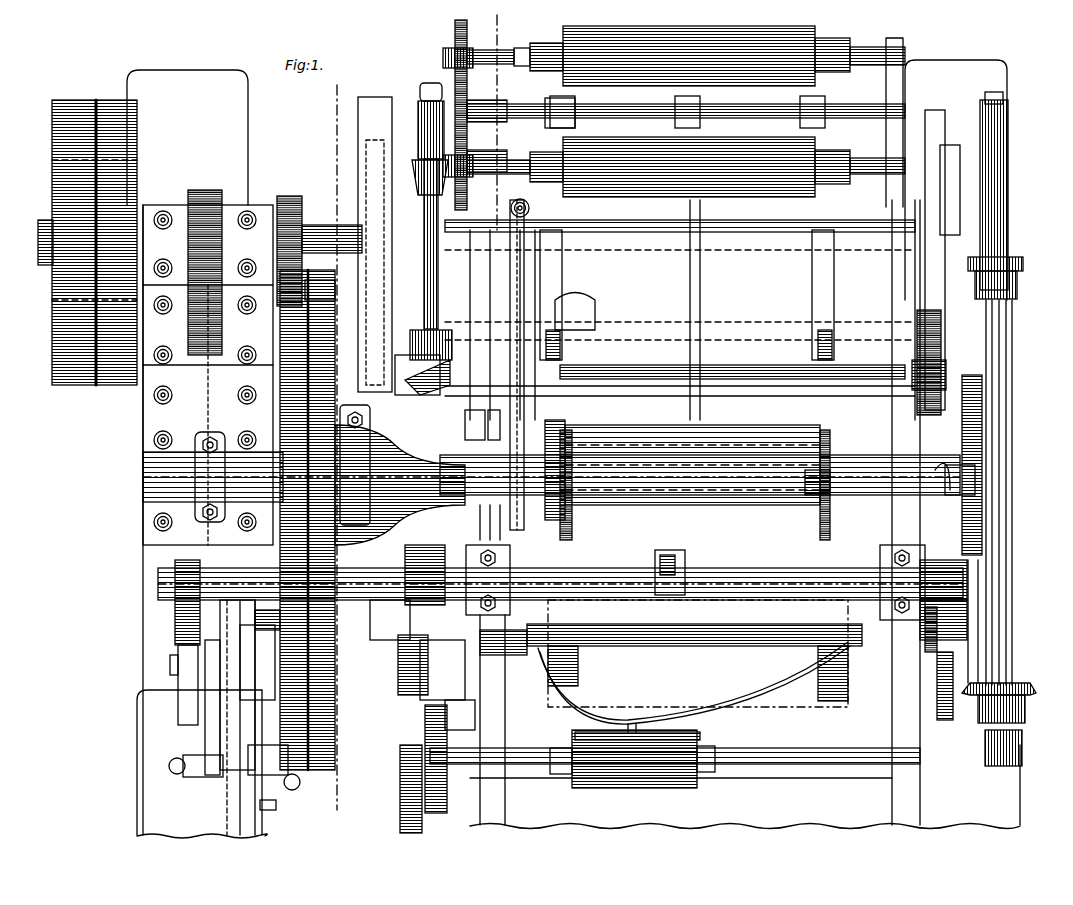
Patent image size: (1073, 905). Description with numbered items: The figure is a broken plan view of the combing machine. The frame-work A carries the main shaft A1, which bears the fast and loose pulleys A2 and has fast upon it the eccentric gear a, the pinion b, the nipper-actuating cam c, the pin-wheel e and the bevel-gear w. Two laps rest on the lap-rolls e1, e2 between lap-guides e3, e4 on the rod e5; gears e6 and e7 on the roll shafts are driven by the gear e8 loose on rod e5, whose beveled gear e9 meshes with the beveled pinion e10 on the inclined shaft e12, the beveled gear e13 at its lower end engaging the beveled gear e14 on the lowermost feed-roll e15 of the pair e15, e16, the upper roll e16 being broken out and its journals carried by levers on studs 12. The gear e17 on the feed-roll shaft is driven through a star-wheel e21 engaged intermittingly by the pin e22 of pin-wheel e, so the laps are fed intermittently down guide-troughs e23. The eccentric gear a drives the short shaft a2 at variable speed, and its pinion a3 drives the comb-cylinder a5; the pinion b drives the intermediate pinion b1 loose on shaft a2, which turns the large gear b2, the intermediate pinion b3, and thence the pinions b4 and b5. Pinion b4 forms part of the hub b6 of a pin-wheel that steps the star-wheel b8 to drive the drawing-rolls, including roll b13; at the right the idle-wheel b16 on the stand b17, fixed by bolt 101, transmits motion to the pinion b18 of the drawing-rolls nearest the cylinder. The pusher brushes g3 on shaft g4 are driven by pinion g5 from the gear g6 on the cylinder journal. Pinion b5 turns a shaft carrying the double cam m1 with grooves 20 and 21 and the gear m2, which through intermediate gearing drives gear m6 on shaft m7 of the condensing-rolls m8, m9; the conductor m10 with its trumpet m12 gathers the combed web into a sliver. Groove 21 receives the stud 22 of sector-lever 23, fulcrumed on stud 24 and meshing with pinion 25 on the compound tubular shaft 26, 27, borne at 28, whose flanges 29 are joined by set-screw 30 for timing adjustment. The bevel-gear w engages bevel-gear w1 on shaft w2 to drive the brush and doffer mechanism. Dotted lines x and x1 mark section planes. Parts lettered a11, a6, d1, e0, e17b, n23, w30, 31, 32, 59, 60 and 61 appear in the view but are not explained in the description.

The frame-work A is at (925, 787).
The fast and loose pulleys A2 is at (94, 235).
The main shaft A1 is at (35, 242).
The eccentric gear a is at (205, 262).
The short shaft a2 is at (80, 328).
The pinion a3 is at (320, 280).
The bracket a11 is at (203, 367).
The comb-cylinder a5 is at (542, 500).
The cylinder a6 is at (682, 461).
The pinion b is at (306, 471).
The intermediate pinion b1 is at (306, 278).
The large toothed gear b2 is at (280, 418).
The intermediate pinion b3 is at (302, 651).
The pinion b4 is at (295, 705).
The pinion b5 is at (285, 769).
The hub b6 is at (935, 665).
The star-wheel b8 is at (385, 610).
The drawing-roll b13 is at (985, 585).
The idle-wheel b16 is at (923, 637).
The stand b17 is at (985, 605).
The pinion b18 is at (407, 625).
The nipper-actuating cam c is at (375, 234).
The disk d1 is at (821, 470).
The pin-wheel e is at (948, 190).
The shaft e0 is at (860, 125).
The lap-roll e1 is at (783, 24).
The lap-roll e2 is at (758, 145).
The lap-guide e3 is at (695, 103).
The lap-guide e4 is at (686, 105).
The rod e5 is at (451, 115).
The toothed gear e6 is at (424, 171).
The toothed gear e7 is at (475, 160).
The toothed gear e8 is at (475, 110).
The beveled gear e9 is at (423, 222).
The beveled pinion e10 is at (640, 370).
The inclined shaft e12 is at (430, 210).
The beveled gear e13 is at (410, 408).
The beveled gear e14 is at (450, 408).
The lowermost feed-roll e15 is at (560, 378).
The uppermost feed-roll e16 is at (672, 368).
The toothed gear e17 is at (947, 415).
The gear e17b is at (860, 635).
The star-wheel e21 is at (945, 345).
The pin e22 is at (990, 308).
The guide-trough e23 is at (715, 270).
The brushes g3 is at (571, 471).
The shaft g4 is at (955, 490).
The pinion g5 is at (985, 498).
The pinion g6 is at (985, 393).
The double cam m1 is at (225, 818).
The gear m2 is at (398, 745).
The gear m6 is at (436, 730).
The shaft m7 is at (675, 759).
The undermost condensing-roll m8 is at (400, 789).
The condensing-roll m9 is at (386, 813).
The conductor m10 is at (671, 662).
The trumpet m12 is at (620, 722).
The bevel gear n23 is at (1012, 633).
The bevel-gear w is at (985, 229).
The bevel-gear w1 is at (1004, 267).
The shaft w2 is at (1012, 440).
The shaft w30 is at (551, 465).
The section line x is at (336, 446).
The section line x1 is at (495, 122).
The studs 12 is at (687, 295).
The groove 20 is at (409, 592).
The groove 21 is at (452, 685).
The roller or stud 22 is at (270, 812).
The sector-lever 23 is at (322, 748).
The stud 24 is at (358, 441).
The pinion 25 is at (491, 364).
The tubular shaft portion 26 is at (400, 568).
The tubular shaft portion 27 is at (606, 582).
The bearings 28 is at (695, 582).
The annular flanges 29 is at (519, 619).
The set-screw 30 is at (548, 549).
The bearing 31 is at (655, 598).
The arm 32 is at (482, 522).
The collar 59 is at (752, 582).
The gear 60 is at (176, 602).
The lever 61 is at (172, 660).
The bolt 101 is at (985, 560).